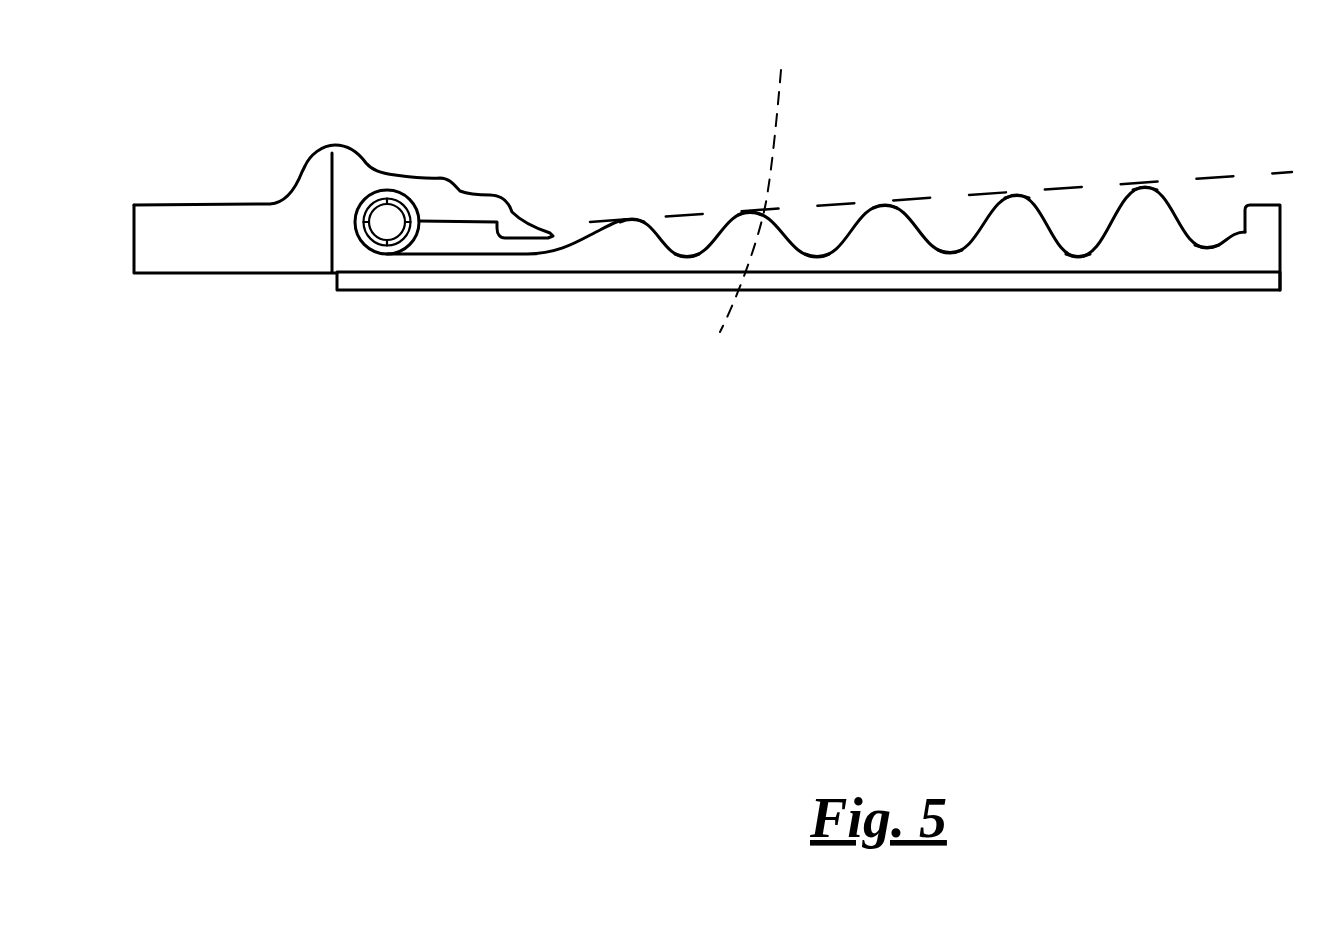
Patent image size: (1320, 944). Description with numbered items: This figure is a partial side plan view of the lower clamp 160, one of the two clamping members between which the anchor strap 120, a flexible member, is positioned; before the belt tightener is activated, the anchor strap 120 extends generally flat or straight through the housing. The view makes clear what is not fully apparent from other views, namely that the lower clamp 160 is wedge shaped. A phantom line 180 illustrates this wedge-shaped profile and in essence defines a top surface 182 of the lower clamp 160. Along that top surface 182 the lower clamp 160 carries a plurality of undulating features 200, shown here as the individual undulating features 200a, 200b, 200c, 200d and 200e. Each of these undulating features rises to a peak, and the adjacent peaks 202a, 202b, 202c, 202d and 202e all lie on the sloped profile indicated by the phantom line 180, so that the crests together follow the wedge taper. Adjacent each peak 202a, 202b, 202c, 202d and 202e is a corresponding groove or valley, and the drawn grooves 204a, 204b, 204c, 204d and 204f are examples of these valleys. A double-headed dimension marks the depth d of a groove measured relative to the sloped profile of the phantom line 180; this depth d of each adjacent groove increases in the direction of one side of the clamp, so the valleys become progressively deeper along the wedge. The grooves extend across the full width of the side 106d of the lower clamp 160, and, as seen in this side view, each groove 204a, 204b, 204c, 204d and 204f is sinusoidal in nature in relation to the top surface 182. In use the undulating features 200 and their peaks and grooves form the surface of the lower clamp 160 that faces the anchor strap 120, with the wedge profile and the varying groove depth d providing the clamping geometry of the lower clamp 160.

The side 106d is at (657, 292).
The anchor strap 120 is at (728, 354).
The lower clamp 160 is at (870, 240).
The phantom line 180 is at (941, 175).
The top surface 182 is at (627, 216).
The undulating features 200 is at (637, 232).
The undulating feature 200a is at (608, 247).
The undulating feature 200b is at (745, 237).
The undulating feature 200c is at (908, 257).
The undulating feature 200d is at (1015, 229).
The undulating feature 200e is at (1137, 213).
The peak 202a is at (628, 207).
The peak 202b is at (742, 210).
The peak 202c is at (870, 198).
The peak 202d is at (1013, 193).
The peak 202e is at (1140, 186).
The groove 204a is at (565, 260).
The groove 204b is at (683, 253).
The groove 204c is at (808, 258).
The groove 204d is at (948, 265).
The groove 204f is at (1207, 236).
The depth d is at (950, 251).